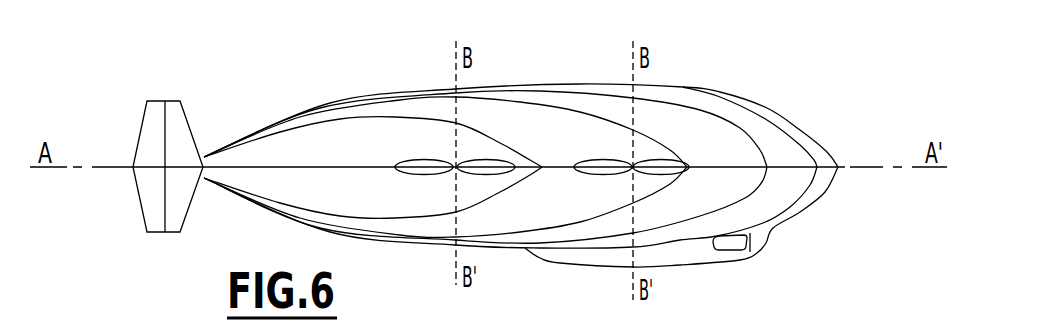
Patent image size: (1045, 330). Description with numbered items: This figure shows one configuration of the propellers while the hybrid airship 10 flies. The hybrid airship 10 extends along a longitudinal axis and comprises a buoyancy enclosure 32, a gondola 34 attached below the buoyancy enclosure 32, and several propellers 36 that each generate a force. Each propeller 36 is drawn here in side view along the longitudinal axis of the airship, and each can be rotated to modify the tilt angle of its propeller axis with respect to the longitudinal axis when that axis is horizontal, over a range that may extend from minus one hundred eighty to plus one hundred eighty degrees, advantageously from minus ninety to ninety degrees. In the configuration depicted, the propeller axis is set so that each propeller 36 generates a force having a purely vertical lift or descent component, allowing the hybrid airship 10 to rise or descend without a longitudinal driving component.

The hybrid airship 10 is at (513, 144).
The buoyancy enclosure 32 is at (720, 92).
The gondola 34 is at (742, 263).
The propeller 36 is at (483, 163).